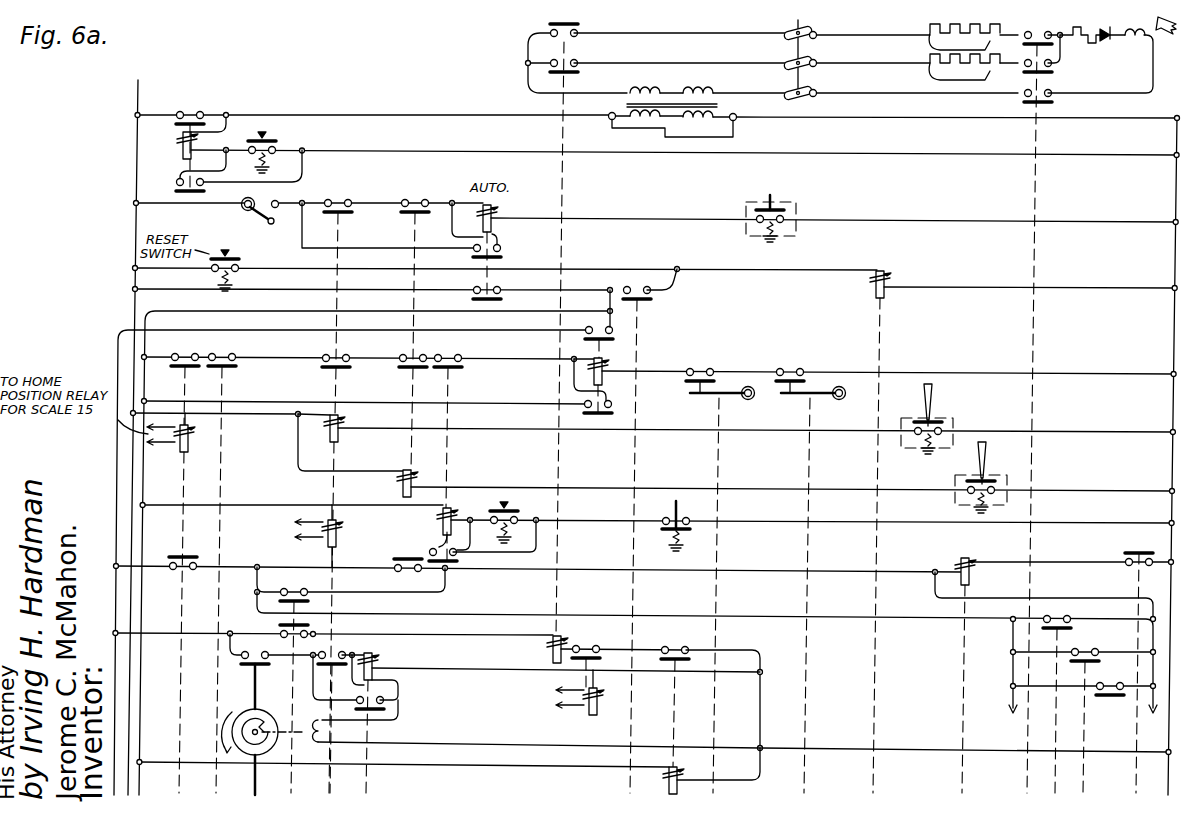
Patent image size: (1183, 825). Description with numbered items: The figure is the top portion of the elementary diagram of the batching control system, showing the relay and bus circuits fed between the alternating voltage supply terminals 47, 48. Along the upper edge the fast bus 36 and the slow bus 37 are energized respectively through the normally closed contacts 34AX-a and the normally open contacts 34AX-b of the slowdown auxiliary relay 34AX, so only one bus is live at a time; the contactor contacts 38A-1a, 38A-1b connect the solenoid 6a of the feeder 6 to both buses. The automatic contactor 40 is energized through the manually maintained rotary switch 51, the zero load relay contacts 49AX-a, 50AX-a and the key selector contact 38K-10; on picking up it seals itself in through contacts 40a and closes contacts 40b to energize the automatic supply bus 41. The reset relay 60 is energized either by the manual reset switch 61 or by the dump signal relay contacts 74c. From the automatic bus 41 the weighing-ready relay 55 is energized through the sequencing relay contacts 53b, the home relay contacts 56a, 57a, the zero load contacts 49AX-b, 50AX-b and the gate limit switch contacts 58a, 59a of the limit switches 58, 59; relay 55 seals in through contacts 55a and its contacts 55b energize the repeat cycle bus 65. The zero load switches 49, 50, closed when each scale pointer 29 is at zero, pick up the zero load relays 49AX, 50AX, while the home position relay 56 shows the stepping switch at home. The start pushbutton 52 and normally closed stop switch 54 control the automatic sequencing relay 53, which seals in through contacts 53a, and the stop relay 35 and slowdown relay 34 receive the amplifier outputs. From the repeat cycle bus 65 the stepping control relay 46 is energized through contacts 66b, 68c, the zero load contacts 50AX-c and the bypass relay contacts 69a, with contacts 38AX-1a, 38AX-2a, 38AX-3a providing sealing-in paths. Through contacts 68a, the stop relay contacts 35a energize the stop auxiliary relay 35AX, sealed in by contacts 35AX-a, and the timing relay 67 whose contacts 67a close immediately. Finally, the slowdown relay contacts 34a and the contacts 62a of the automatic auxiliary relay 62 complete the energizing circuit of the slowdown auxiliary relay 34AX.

The alternating voltage supply terminal 47 is at (137, 100).
The alternating voltage supply terminal 48 is at (1176, 102).
The automatic supply bus 41 is at (146, 392).
The repeat cycle bus 65 is at (117, 352).
The fast bus 36 is at (725, 32).
The slow bus 37 is at (716, 62).
The normally closed contacts of relay 34AX 34AX-a is at (561, 28).
The normally open contacts of relay 34AX 34AX-b is at (575, 68).
The normally open contacts of contactor 38A-1 38A-1a is at (1036, 34).
The normally open contacts of contactor 38A-1 38A-1b is at (1050, 68).
The feeder solenoid 6a is at (1134, 42).
The feeder 6 is at (1171, 35).
The normally closed contacts of zero load relay 49AX 49AX-a is at (339, 196).
The normally closed contacts of zero load relay 50AX 50AX-a is at (416, 196).
The automatic contactor 40 is at (492, 228).
The contacts of automatic contactor 40a is at (500, 255).
The contacts of automatic contactor 40b is at (500, 296).
The rotary switch 51 is at (264, 215).
The reset switch 61 is at (236, 258).
The key selector switch 38K-10 is at (776, 211).
The normally open contacts of dump signal relay 74 74c is at (637, 288).
The reset relay 60 is at (875, 296).
The normally open contacts of relay 55 55b is at (598, 326).
The contacts of home position relay 56 56a is at (185, 380).
The contacts of home position relay 57 57a is at (223, 564).
The zero load relay contacts 49AX-b is at (332, 351).
The zero load relay contacts 50AX-b is at (413, 351).
The contacts of sequencing relay 53 53b is at (449, 422).
The weighing-ready relay 55 is at (602, 382).
The normally open contacts of relay 55 55a is at (583, 410).
The limit switch contacts 58a is at (700, 365).
The limit switch 58 is at (688, 391).
The limit switch contacts 59a is at (791, 365).
The limit switch 59 is at (798, 398).
The scale pointer 29 is at (944, 388).
The zero load switch 49 is at (950, 424).
The zero load switch 50 is at (996, 483).
The home position relay 56 is at (189, 452).
The zero load auxiliary relay 49AX is at (339, 440).
The zero load auxiliary relay 50AX is at (405, 489).
The automatic sequencing relay 53 is at (443, 530).
The start pushbutton switch 52 is at (526, 514).
The stop switch 54 is at (656, 537).
The contacts of sequencing relay 53 53a is at (460, 558).
The stop relay 35 is at (338, 544).
The normally closed contacts of completed sequence relay 66 66b is at (178, 574).
The normally open contacts of ready relay 68 68c is at (294, 589).
The zero load contacts 50AX-c is at (402, 570).
The stepping control relay 46 is at (970, 578).
The normally closed contacts of bypass relay 69 69a is at (1132, 569).
The normally open contacts of auxiliary relay 38AX-1 38AX-1a is at (1058, 616).
The contacts of auxiliary relay 38AX-2 38AX-2a is at (1085, 650).
The contacts of auxiliary relay 38AX-3 38AX-3a is at (1113, 679).
The normally closed contacts of ready relay 68 68a is at (280, 626).
The normally open contacts of stop relay 35 35a is at (340, 656).
The stop auxiliary relay 35AX is at (382, 665).
The normally open contacts of relay 35AX 35AX-a is at (383, 708).
The timer contacts 67a is at (245, 664).
The timing relay 67 is at (326, 742).
The slowdown auxiliary relay 34AX is at (553, 658).
The normally open contacts of slowdown relay 34 34a is at (596, 647).
The normally open contacts of relay 62 62a is at (677, 647).
The slowdown relay 34 is at (598, 712).
The automatic auxiliary relay 62 is at (669, 790).